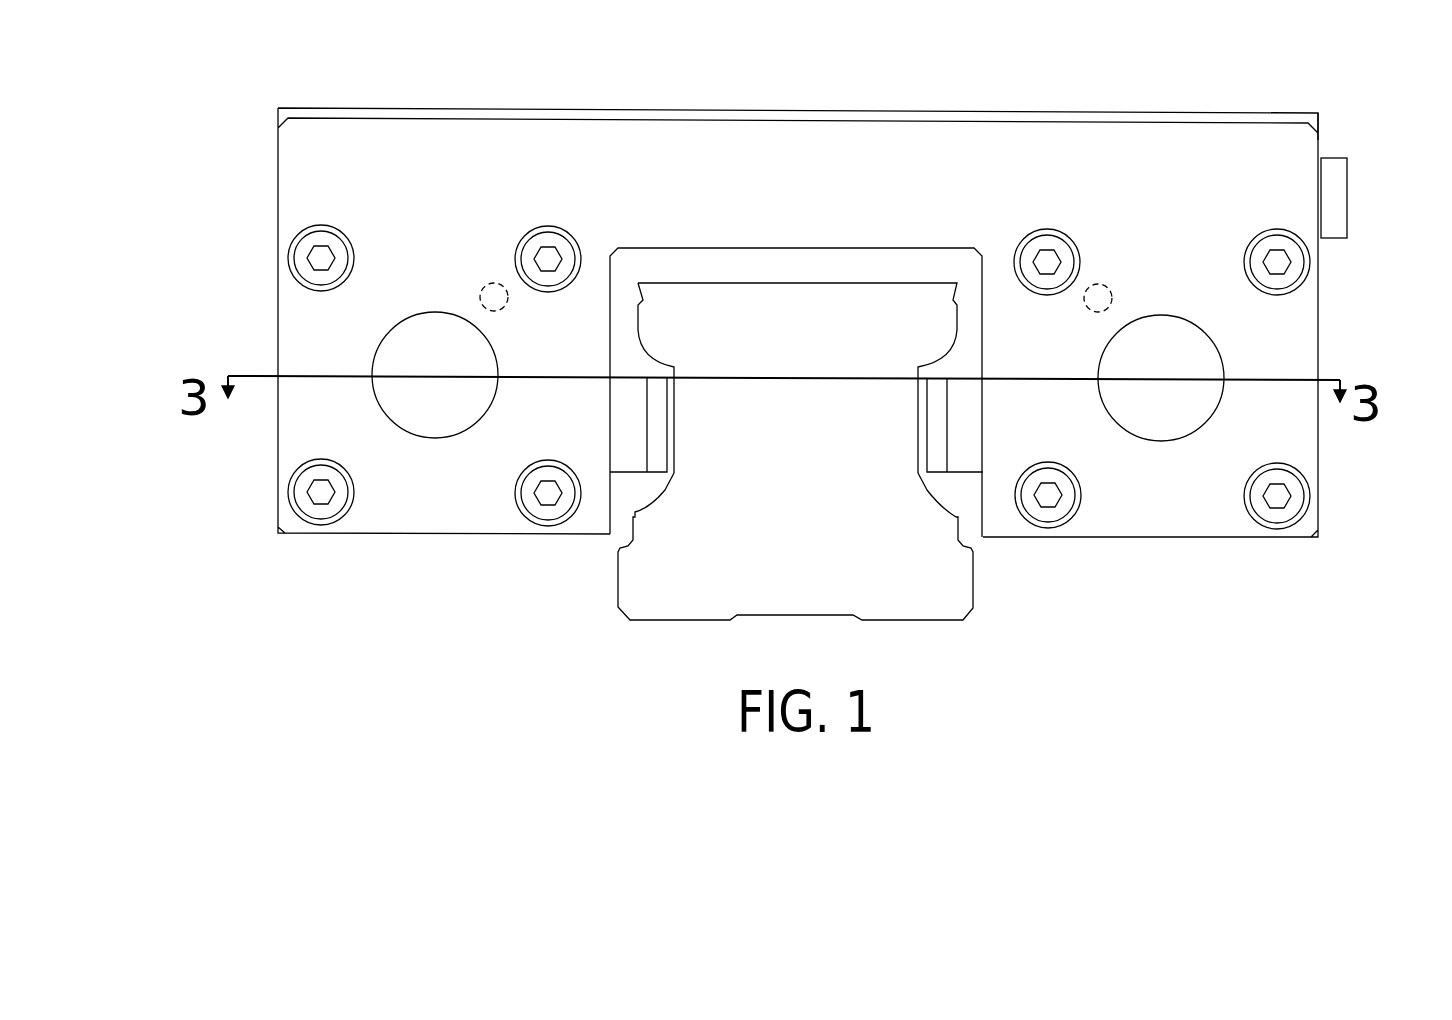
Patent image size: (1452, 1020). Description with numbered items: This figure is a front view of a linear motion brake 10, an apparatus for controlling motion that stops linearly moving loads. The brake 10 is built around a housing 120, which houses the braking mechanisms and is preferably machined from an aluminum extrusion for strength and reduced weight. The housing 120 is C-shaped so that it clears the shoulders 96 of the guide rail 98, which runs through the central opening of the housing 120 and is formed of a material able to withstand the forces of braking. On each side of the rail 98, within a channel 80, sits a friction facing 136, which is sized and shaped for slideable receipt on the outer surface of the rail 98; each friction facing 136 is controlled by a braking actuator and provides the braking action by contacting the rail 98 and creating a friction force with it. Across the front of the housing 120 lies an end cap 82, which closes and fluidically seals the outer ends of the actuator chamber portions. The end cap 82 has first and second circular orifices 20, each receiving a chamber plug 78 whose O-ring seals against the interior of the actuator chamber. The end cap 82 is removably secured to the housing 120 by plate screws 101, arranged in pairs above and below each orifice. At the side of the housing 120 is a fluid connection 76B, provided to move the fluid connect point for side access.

The brake 10 is at (203, 150).
The circular orifices 20 is at (377, 402).
The chamber plug 78 is at (428, 350).
The channel 80 is at (918, 428).
The end cap 82 is at (503, 152).
The shoulders 96 is at (957, 312).
The rail 98 is at (930, 567).
The plate screws 101 is at (520, 252).
The housing 120 is at (1318, 113).
The friction facing 136 is at (625, 442).
The fluid connection 76B is at (1343, 200).